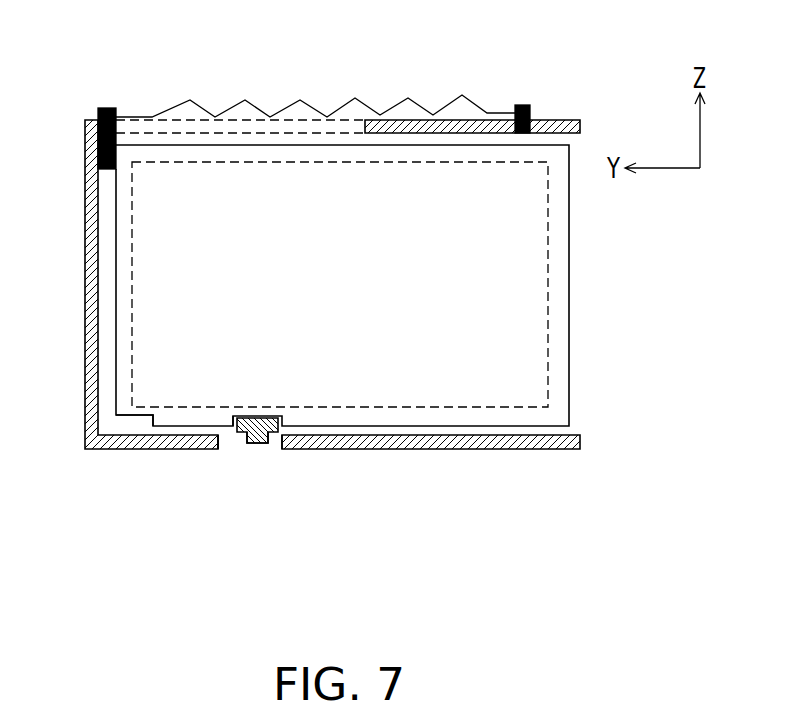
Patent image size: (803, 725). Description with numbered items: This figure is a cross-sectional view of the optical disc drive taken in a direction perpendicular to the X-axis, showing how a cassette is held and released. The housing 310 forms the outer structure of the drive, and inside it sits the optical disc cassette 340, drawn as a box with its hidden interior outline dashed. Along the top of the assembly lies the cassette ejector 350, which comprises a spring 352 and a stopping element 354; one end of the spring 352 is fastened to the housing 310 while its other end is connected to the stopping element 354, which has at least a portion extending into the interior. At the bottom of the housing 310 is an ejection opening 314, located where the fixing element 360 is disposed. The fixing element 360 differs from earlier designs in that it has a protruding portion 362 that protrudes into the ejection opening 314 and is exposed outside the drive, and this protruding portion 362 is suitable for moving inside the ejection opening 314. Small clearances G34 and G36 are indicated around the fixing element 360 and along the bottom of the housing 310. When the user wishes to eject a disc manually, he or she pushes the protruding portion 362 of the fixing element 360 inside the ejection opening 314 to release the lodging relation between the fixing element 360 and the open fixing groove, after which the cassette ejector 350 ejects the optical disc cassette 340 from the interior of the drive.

The housing 310 is at (90, 289).
The ejection opening 314 is at (248, 467).
The optical disc cassette 340 is at (558, 295).
The cassette ejector 350 is at (303, 85).
The spring 352 is at (103, 47).
The stopping element 354 is at (103, 107).
The fixing element 360 is at (254, 492).
The protruding portion 362 is at (258, 441).
The gap G34 is at (236, 442).
The gap G36 is at (134, 431).